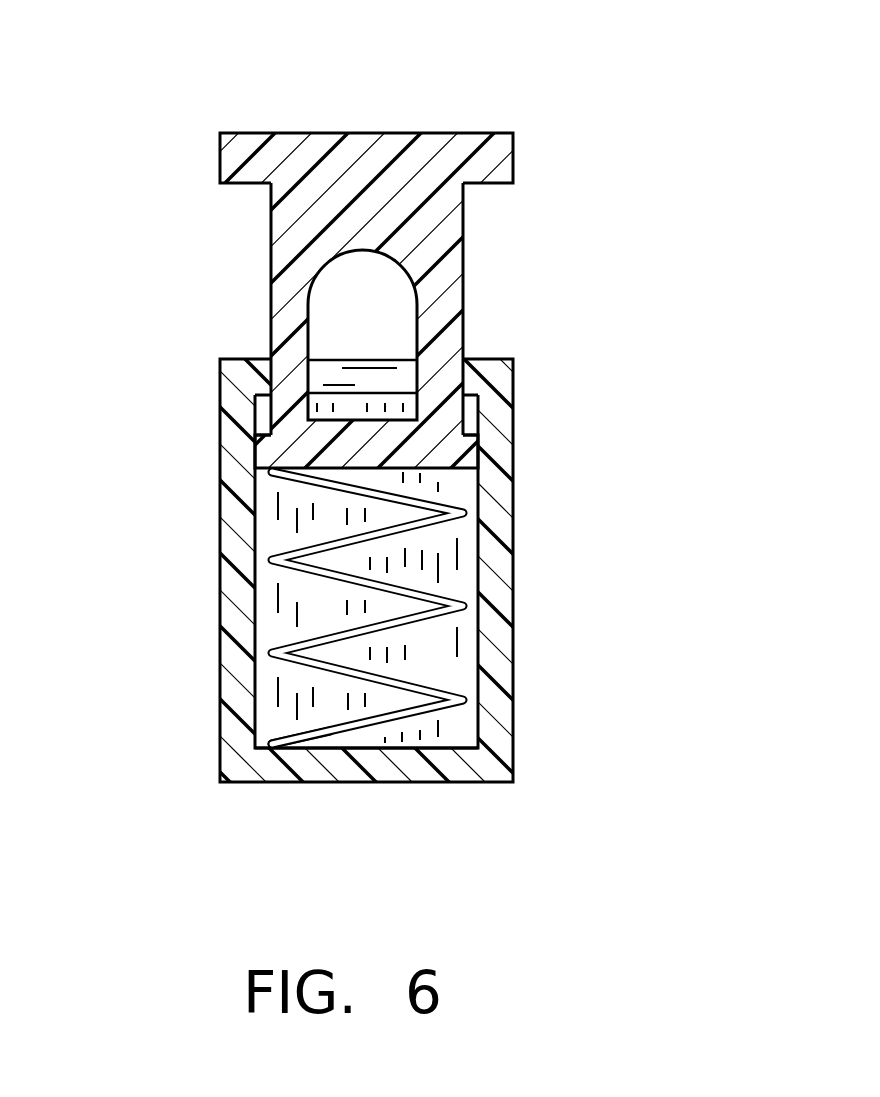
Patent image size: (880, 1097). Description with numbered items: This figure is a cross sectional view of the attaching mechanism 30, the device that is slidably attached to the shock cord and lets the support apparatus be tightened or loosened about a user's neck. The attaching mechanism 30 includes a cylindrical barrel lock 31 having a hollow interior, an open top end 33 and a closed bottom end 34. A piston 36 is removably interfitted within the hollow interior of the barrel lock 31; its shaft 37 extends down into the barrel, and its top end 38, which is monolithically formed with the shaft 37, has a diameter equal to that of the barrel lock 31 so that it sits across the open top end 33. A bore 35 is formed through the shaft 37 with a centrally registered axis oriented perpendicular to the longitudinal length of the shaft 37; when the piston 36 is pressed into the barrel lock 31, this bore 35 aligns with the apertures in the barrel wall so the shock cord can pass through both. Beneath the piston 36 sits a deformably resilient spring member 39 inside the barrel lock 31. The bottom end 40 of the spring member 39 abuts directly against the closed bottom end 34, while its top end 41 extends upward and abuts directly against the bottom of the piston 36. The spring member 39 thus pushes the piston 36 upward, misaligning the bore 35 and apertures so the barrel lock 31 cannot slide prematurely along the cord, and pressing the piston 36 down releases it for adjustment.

The attaching mechanism 30 is at (100, 162).
The barrel lock 31 is at (488, 397).
The open top end 33 is at (245, 375).
The closed bottom end 34 is at (452, 767).
The bore 35 is at (390, 317).
The piston 36 is at (296, 160).
The shaft 37 is at (405, 432).
The top end 38 is at (440, 143).
The spring member 39 is at (390, 495).
The bottom end 40 is at (284, 744).
The top end 41 is at (285, 474).